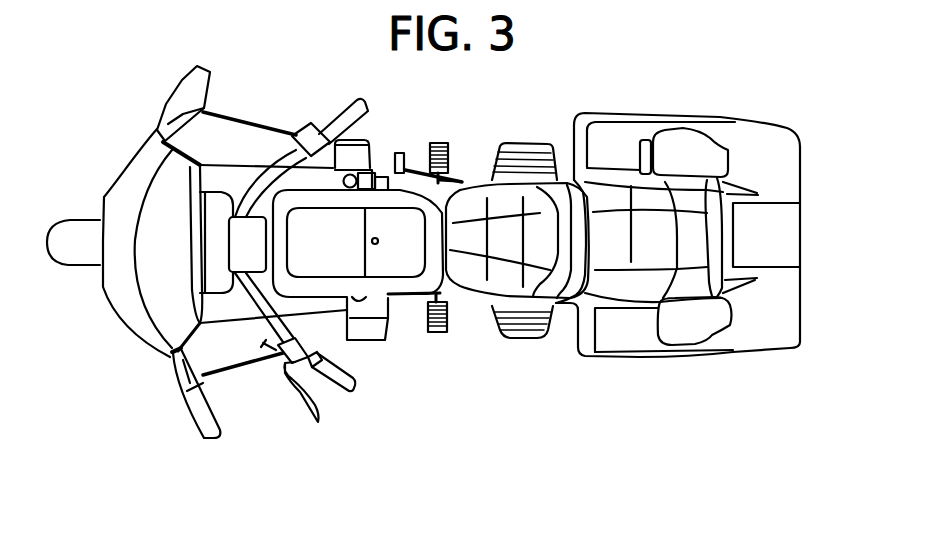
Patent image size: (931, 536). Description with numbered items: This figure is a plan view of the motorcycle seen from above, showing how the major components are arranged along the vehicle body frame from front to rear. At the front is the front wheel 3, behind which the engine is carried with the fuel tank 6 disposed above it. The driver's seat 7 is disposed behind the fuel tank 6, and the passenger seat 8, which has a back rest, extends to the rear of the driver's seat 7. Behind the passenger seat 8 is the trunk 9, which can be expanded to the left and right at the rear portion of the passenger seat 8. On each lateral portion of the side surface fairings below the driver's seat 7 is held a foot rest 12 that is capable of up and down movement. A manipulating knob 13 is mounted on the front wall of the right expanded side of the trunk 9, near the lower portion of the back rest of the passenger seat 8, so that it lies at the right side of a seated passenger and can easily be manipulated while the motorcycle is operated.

The front wheel 3 is at (75, 218).
The fuel tank 6 is at (332, 254).
The driver's seat 7 is at (493, 280).
The passenger seat 8 is at (622, 287).
The trunk 9 is at (778, 237).
The foot rest 12 is at (512, 145).
The manipulating knob 13 is at (643, 145).